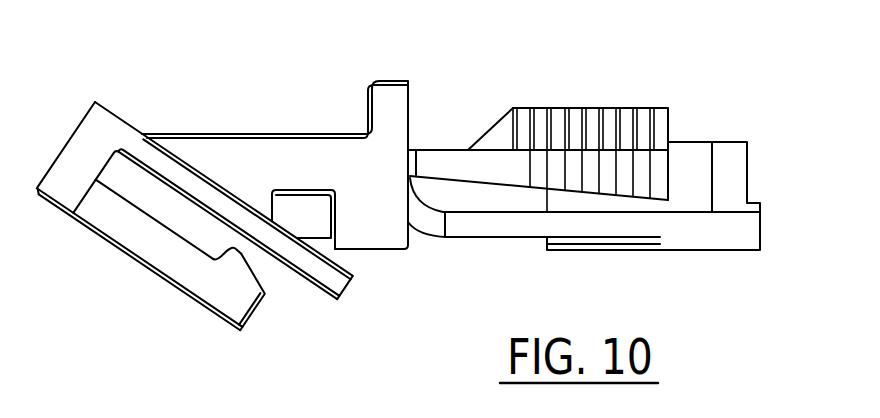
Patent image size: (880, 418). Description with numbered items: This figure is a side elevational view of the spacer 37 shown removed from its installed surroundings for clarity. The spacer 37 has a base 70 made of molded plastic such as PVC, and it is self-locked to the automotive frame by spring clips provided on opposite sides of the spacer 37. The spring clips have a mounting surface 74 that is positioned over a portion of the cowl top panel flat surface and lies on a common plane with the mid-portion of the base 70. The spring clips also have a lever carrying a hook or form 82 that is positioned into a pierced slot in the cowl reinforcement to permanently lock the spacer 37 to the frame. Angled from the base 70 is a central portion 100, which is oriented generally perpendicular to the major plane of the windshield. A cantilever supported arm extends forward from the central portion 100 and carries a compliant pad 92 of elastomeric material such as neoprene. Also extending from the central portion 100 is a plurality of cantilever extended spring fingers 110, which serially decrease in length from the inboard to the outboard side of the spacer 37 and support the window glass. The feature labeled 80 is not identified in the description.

The spacer 37 is at (403, 60).
The base 70 is at (281, 136).
The mounting surface 74 is at (158, 158).
The retention strip 80 is at (255, 322).
The hook or form 82 is at (257, 272).
The compliant pad 92 is at (700, 142).
The central portion 100 is at (403, 80).
The spring fingers 110 is at (663, 107).